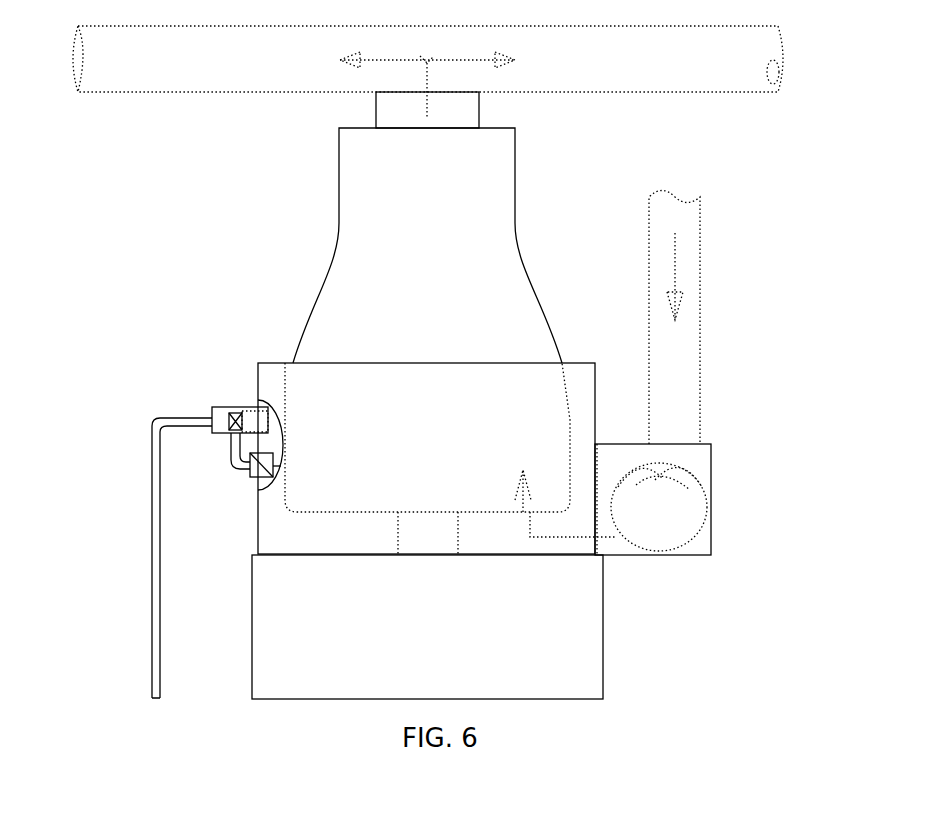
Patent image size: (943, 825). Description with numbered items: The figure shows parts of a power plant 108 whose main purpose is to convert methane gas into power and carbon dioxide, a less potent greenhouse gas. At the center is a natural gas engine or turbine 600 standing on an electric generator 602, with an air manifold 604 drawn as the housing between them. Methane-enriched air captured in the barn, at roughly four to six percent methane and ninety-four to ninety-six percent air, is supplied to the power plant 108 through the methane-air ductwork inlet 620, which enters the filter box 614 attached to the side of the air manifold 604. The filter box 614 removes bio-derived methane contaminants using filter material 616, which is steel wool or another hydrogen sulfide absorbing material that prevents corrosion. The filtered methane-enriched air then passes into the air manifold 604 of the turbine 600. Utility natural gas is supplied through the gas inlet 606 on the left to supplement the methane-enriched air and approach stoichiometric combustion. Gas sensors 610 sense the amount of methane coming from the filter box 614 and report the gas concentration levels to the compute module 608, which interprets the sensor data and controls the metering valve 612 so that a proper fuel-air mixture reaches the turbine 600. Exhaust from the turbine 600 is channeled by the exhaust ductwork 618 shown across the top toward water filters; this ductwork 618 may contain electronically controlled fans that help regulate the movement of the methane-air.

The power plant 108 is at (702, 651).
The natural gas engine or turbine 600 is at (339, 175).
The electric generator 602 is at (252, 640).
The air manifold 604 is at (275, 363).
The gas inlet 606 is at (152, 560).
The compute module 608 is at (213, 407).
The gas sensors 610 is at (262, 420).
The metering valve 612 is at (250, 476).
The filter box 614 is at (711, 482).
The filter material 616 is at (667, 498).
The exhaust ductwork 618 is at (713, 93).
The methane-air ductwork inlet 620 is at (700, 267).